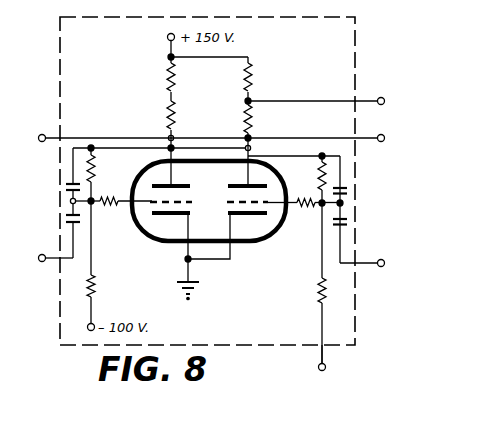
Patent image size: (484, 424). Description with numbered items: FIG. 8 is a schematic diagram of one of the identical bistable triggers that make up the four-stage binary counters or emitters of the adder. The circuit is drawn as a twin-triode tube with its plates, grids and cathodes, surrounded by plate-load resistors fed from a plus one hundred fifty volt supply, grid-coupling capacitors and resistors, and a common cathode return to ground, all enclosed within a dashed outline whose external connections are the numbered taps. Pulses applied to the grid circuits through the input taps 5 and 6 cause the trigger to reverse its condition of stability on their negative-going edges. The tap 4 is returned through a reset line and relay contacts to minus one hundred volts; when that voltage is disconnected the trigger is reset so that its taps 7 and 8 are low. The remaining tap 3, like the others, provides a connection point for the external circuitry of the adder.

The tap 3 is at (371, 263).
The tap 4 is at (328, 360).
The tap 5 is at (133, 138).
The tap 6 is at (47, 258).
The tap 7 is at (325, 139).
The tap 8 is at (325, 101).